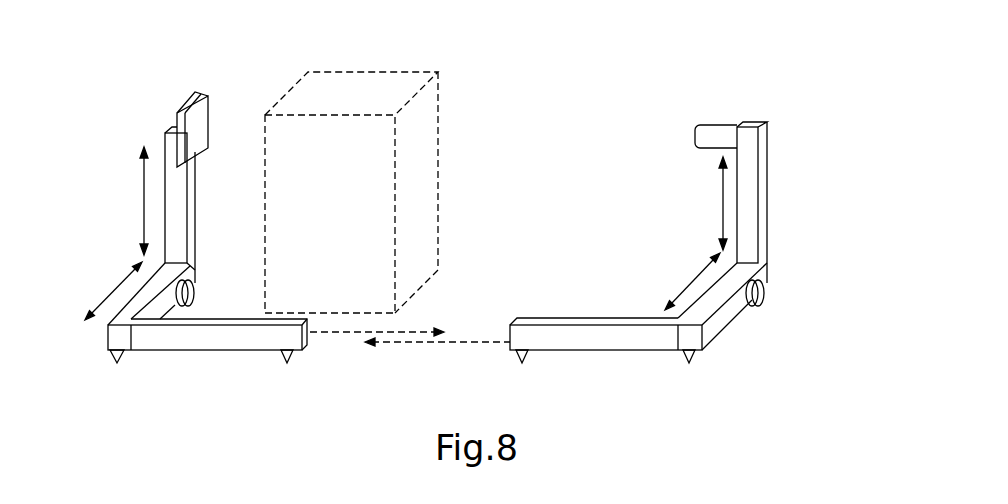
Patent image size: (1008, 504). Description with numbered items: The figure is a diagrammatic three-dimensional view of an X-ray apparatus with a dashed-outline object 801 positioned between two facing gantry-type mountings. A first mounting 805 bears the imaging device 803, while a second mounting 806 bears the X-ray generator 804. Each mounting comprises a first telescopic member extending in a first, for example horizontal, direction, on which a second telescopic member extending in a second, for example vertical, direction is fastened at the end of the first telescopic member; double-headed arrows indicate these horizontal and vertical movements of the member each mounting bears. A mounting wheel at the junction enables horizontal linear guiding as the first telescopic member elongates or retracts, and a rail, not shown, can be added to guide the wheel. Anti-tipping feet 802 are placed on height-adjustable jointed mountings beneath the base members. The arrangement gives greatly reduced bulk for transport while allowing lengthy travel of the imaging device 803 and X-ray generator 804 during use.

The object to be scanned 801 is at (440, 142).
The anti-tipping feet 802 is at (305, 342).
The imaging device 803 is at (208, 112).
The X-ray generator 804 is at (693, 133).
The first mounting 805 is at (138, 297).
The second mounting 806 is at (733, 320).